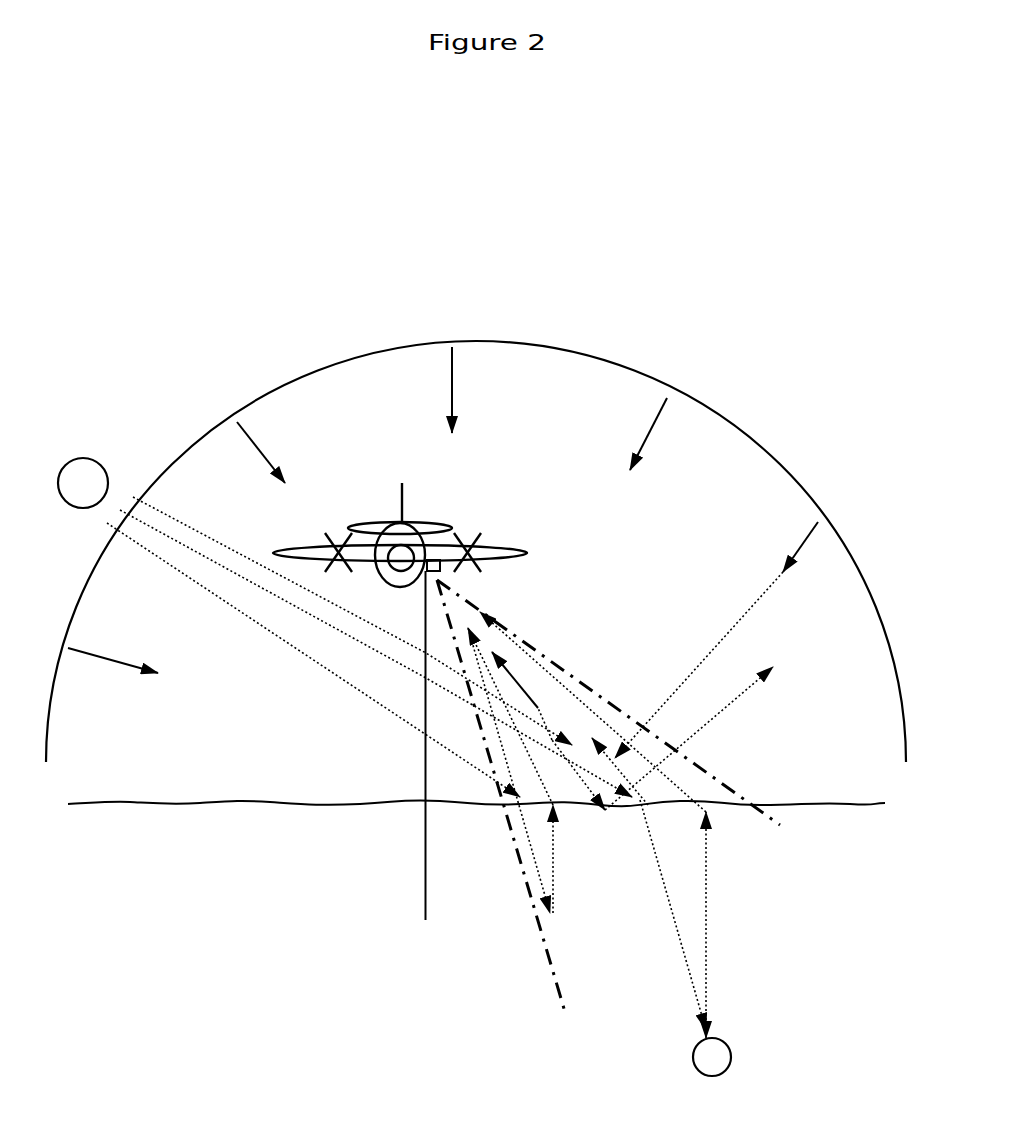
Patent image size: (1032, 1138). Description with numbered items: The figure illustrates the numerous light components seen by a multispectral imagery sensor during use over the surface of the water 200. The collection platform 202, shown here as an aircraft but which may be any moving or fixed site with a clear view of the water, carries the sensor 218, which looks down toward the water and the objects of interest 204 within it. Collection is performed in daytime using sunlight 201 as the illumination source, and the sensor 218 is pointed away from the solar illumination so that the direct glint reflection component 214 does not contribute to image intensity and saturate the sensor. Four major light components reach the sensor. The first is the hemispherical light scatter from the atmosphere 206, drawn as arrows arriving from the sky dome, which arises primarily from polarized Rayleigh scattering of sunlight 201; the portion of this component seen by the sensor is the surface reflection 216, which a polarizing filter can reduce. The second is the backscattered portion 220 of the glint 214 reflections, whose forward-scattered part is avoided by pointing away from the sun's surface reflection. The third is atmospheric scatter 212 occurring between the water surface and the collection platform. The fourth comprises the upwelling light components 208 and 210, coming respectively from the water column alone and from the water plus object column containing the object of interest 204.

The surface of the water 200 is at (212, 797).
The sunlight 201 is at (147, 536).
The collection platform 202 is at (412, 508).
The object of interest 204 is at (733, 1050).
The hemispherical light scatter from the atmosphere 206 is at (447, 370).
The upwelling light component from the water column 208 is at (560, 865).
The upwelling light component from the water plus object column 210 is at (712, 977).
The atmospheric scatter 212 is at (528, 665).
The direct glint reflection component 214 is at (748, 700).
The surface reflection 216 is at (578, 742).
The sensor 218 is at (436, 576).
The backscattered portion of the glint 220 is at (622, 754).